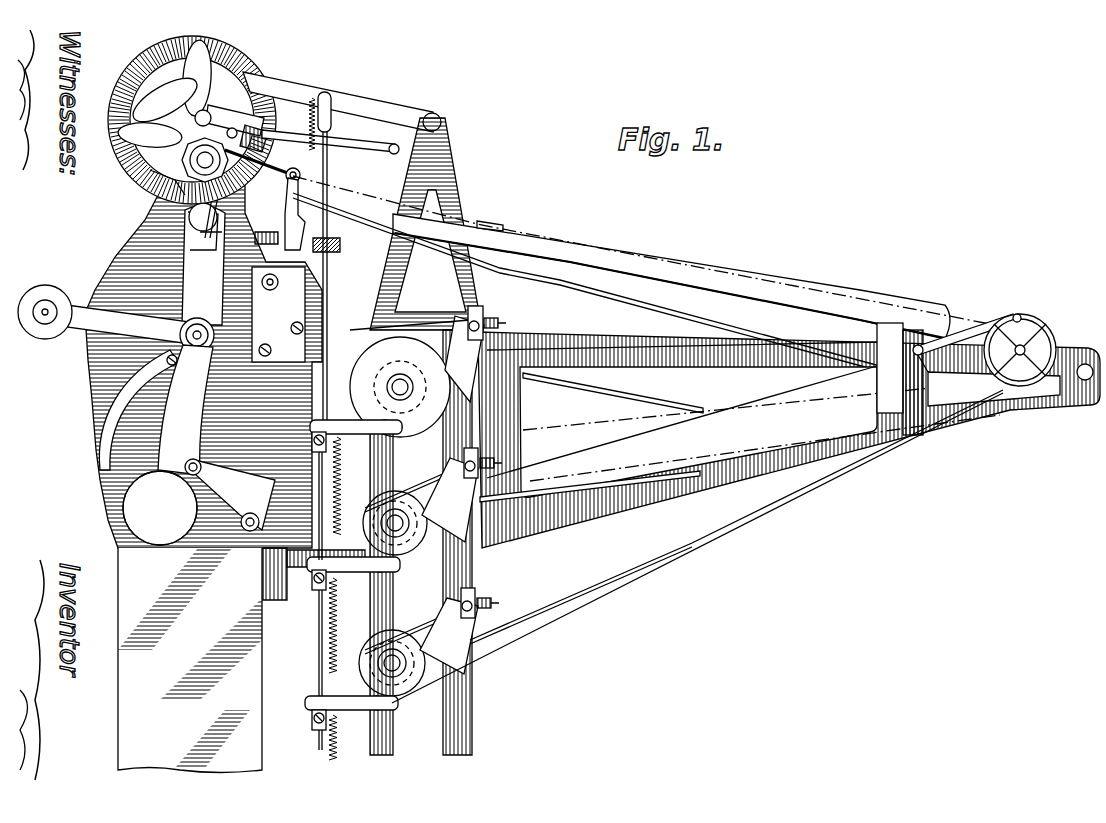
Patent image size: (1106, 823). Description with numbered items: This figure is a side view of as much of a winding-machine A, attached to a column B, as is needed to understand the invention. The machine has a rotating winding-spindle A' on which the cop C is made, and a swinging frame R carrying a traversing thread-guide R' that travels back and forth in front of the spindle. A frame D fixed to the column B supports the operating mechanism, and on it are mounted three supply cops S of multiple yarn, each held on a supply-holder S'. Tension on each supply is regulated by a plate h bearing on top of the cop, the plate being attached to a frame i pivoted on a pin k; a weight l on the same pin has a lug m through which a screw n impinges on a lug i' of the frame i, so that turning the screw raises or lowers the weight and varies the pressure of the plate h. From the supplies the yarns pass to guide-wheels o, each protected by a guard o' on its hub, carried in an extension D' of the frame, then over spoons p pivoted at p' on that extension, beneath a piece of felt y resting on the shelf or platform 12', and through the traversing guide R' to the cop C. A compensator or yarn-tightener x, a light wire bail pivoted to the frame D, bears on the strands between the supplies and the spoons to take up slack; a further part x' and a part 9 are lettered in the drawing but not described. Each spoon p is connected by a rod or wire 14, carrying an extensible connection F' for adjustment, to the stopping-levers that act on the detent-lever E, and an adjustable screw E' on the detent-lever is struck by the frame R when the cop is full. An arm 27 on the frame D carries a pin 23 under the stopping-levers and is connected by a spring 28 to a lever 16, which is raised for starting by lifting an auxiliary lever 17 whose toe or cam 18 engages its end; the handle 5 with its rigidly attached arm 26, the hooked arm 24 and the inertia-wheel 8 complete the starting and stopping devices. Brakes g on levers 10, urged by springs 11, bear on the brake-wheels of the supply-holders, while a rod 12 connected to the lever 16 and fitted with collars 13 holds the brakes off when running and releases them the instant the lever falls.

The winding-machine A is at (189, 365).
The winding-spindle A' is at (151, 190).
The column B is at (190, 660).
The cop C is at (185, 155).
The frame D is at (426, 436).
The frame extension D' is at (789, 440).
The detent-lever E is at (279, 214).
The adjustable screw E' is at (335, 255).
The block F' is at (900, 379).
The swinging frame R is at (203, 265).
The traversing thread-guide R' is at (205, 235).
The supply-cops S is at (405, 552).
The supply-holder S' is at (402, 521).
The brake g is at (405, 420).
The plate h is at (410, 472).
The frame i is at (497, 462).
The lug i' is at (450, 441).
The pin k is at (452, 495).
The weight l is at (473, 520).
The lug m is at (495, 318).
The screw n is at (499, 603).
The guide-wheels o is at (1028, 346).
The guard o' is at (1029, 306).
The spoons p is at (964, 333).
The spoon pivot p' is at (987, 378).
The compensator x is at (697, 522).
The cord x' is at (591, 443).
The felt y is at (500, 224).
The handle 5 is at (196, 78).
The inertia-wheel 8 is at (135, 143).
The pulley 9 is at (409, 717).
The brake-levers 10 is at (347, 554).
The springs 11 is at (340, 462).
The rod 12 is at (334, 261).
The rail 12' is at (671, 276).
The collars 13 is at (312, 440).
The rods or wires 14 is at (680, 298).
The lever 16 is at (388, 112).
The auxiliary lever 17 is at (150, 134).
The toe or cam 18 is at (165, 100).
The pin 23 is at (205, 206).
The arm 24 is at (231, 122).
The arm 26 is at (288, 180).
The arm 27 is at (330, 139).
The spring 28 is at (310, 124).